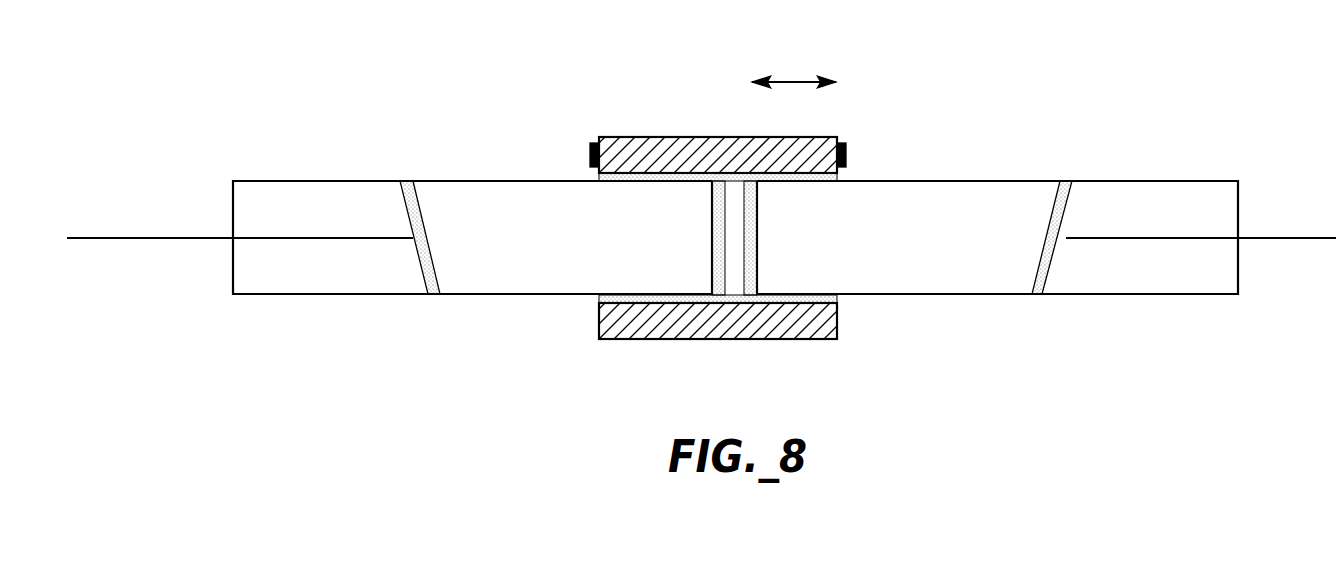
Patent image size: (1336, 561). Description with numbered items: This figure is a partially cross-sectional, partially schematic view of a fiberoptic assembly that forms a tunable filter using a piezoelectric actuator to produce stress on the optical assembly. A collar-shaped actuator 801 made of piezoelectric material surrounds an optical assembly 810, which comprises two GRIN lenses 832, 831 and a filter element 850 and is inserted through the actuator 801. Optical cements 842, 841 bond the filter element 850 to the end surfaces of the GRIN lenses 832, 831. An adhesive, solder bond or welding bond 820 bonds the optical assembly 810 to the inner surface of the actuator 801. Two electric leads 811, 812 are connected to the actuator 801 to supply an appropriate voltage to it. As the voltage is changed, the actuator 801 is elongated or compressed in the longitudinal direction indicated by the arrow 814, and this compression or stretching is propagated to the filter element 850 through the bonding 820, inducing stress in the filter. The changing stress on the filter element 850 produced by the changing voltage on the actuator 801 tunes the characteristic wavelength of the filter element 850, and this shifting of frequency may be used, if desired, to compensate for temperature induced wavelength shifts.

The collar-shaped actuator 801 is at (668, 134).
The optical assembly 810 is at (943, 100).
The electric lead 811 is at (846, 152).
The electric lead 812 is at (590, 152).
The arrow 814 is at (795, 72).
The bonding 820 is at (593, 297).
The GRIN lens 831 is at (963, 297).
The GRIN lens 832 is at (506, 297).
The optical cement 841 is at (718, 289).
The optical cement 842 is at (752, 282).
The filter element 850 is at (733, 284).